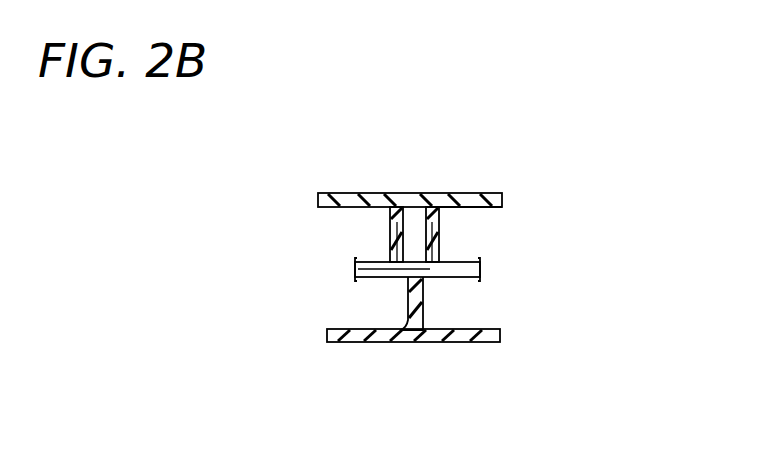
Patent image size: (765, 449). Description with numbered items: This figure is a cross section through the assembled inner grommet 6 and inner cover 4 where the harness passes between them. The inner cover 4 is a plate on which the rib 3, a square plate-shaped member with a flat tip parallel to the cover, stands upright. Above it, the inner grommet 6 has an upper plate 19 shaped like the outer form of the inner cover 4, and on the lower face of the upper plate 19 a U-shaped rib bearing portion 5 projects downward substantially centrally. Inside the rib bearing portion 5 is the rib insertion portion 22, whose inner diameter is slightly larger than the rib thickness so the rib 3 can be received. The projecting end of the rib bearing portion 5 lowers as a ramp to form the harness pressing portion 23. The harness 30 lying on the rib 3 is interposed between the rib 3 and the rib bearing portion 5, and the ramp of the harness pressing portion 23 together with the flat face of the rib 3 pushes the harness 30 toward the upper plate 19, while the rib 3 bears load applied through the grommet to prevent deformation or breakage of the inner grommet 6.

The inner grommet 6 is at (487, 193).
The rib bearing portion 5 is at (393, 235).
The rib insertion portion 22 is at (428, 228).
The upper plate 19 is at (467, 200).
The harness 30 is at (367, 262).
The harness pressing portion 23 is at (424, 278).
The inner cover 4 is at (363, 342).
The rib 3 is at (424, 312).